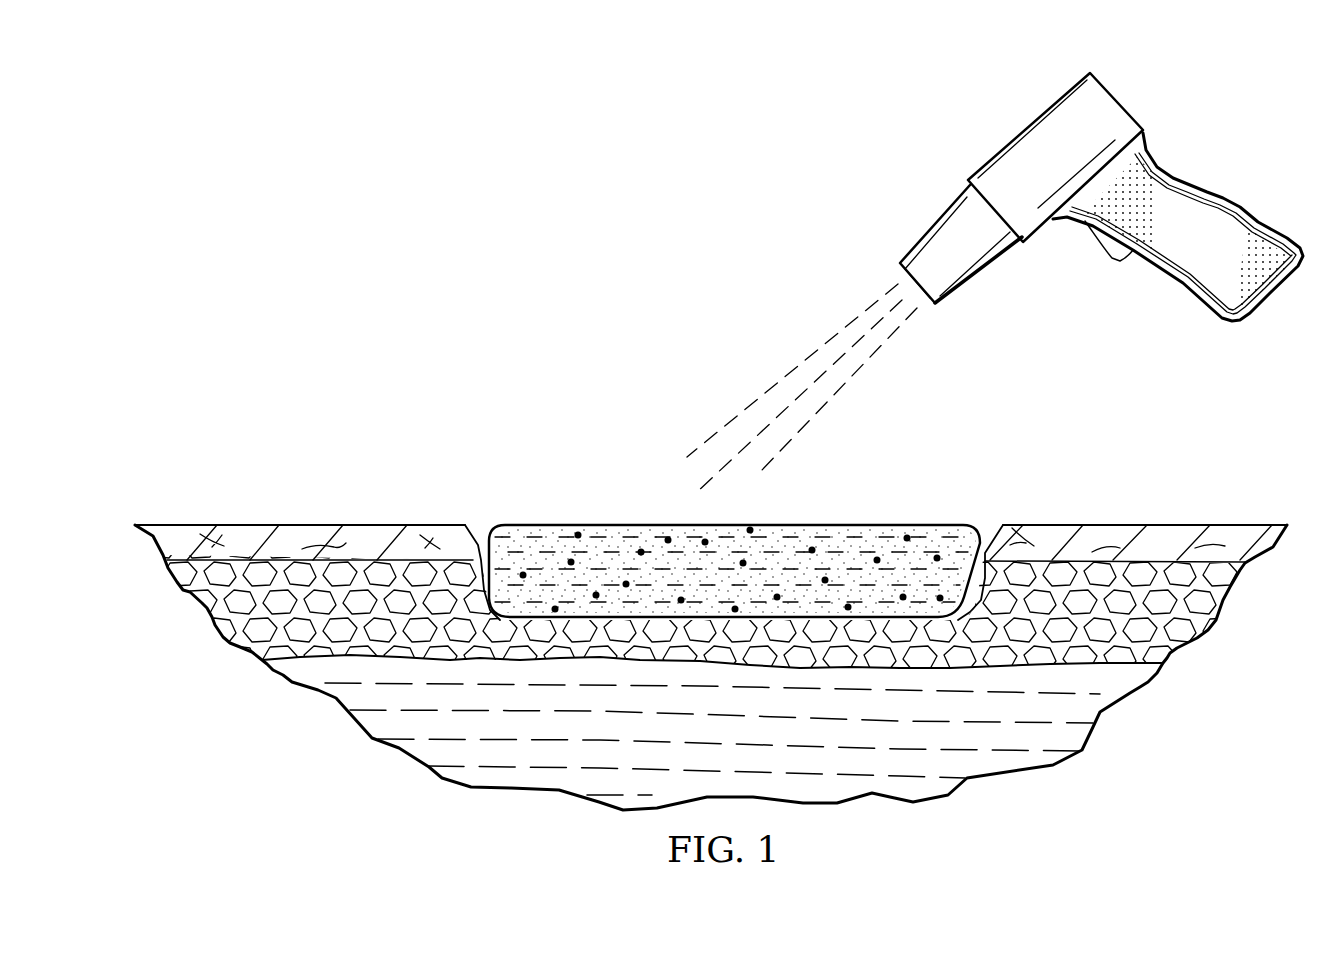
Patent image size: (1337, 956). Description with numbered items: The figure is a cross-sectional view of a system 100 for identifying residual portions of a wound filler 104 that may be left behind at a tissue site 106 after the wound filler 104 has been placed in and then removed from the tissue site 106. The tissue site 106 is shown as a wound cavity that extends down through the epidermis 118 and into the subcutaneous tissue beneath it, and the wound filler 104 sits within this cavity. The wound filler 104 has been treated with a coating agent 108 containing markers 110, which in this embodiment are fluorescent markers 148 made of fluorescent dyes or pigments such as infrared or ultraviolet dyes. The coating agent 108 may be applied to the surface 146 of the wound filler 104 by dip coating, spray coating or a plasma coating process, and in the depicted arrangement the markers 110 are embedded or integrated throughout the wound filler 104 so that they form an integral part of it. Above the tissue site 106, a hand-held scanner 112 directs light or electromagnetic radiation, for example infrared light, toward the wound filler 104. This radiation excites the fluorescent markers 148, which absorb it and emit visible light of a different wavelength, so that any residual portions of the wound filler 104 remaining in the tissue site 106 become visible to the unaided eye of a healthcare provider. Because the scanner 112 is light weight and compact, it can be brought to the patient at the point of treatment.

The system 100 is at (506, 318).
The wound filler 104 is at (489, 525).
The tissue site 106 is at (972, 606).
The coating agent 108 is at (531, 535).
The markers 110 is at (558, 610).
The scanner 112 is at (1120, 98).
The epidermis 118 is at (1168, 533).
The surface 146 is at (642, 525).
The fluorescent markers 148 is at (578, 531).